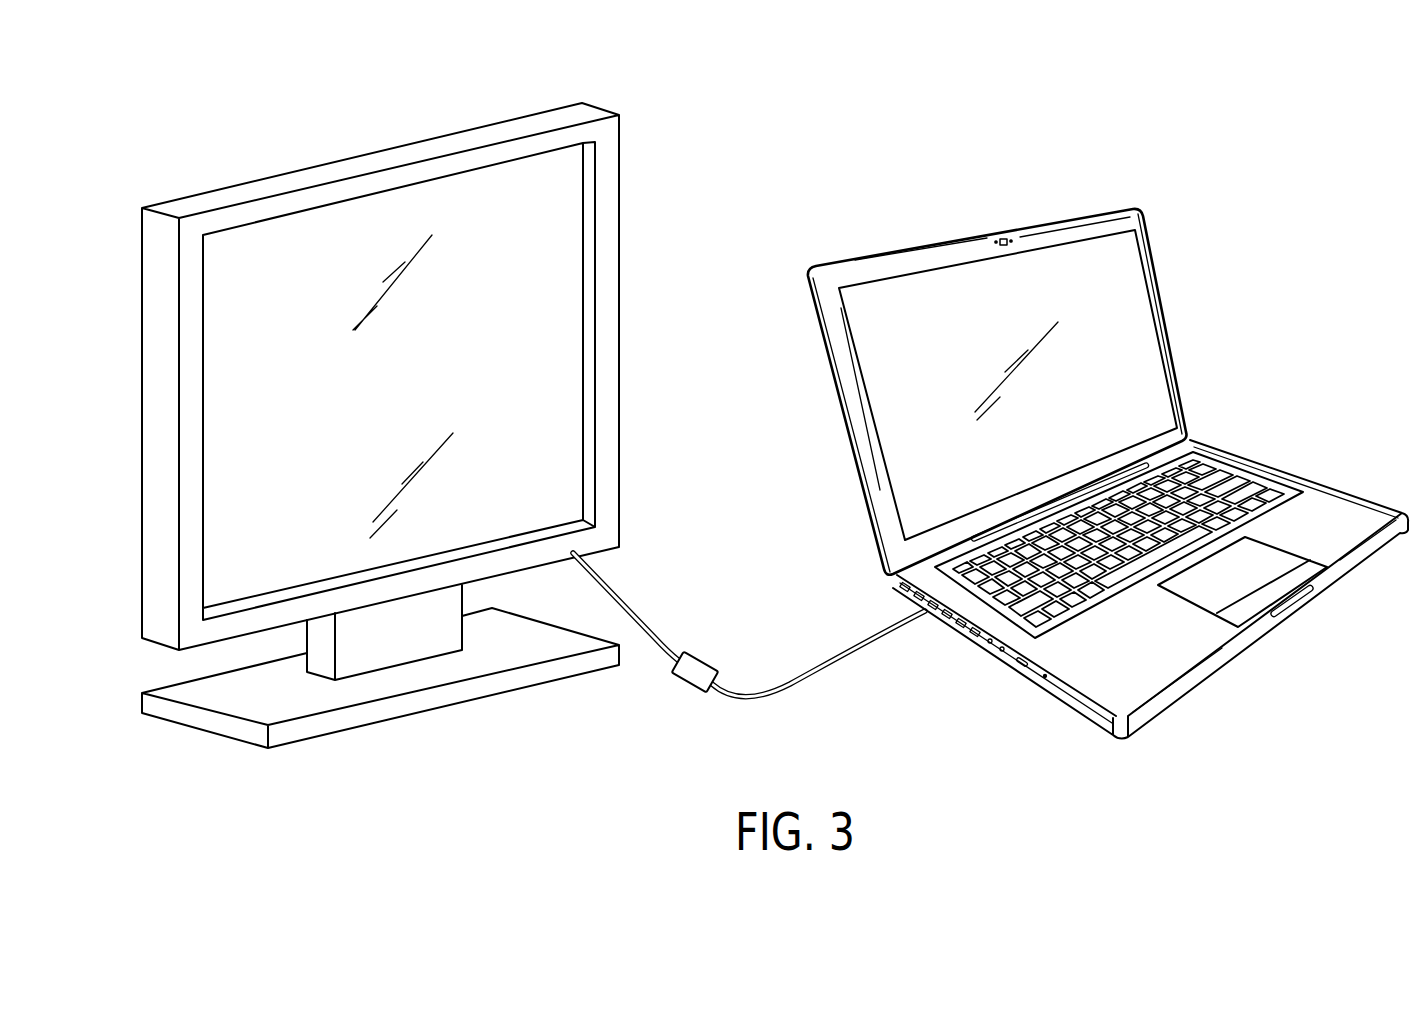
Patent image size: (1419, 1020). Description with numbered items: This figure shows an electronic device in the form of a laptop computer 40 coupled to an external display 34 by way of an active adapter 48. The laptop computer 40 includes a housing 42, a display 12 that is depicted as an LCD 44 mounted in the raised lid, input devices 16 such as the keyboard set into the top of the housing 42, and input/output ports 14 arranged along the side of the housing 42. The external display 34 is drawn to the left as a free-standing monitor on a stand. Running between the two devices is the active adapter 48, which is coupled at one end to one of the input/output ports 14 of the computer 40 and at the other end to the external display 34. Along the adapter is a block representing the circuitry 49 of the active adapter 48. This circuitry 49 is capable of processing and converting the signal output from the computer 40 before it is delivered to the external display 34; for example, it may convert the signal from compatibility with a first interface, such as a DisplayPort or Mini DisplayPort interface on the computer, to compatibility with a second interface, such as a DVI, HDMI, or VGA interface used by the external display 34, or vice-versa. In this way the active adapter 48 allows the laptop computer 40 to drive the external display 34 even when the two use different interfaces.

The external display 34 is at (393, 167).
The laptop computer 40 is at (1108, 465).
The LCD 44 is at (1009, 392).
The display 12 is at (1133, 350).
The input devices 16 is at (1240, 478).
The housing 42 is at (1305, 479).
The input/output ports 14 is at (962, 632).
The active adapter 48 is at (778, 690).
The circuitry 49 is at (703, 658).